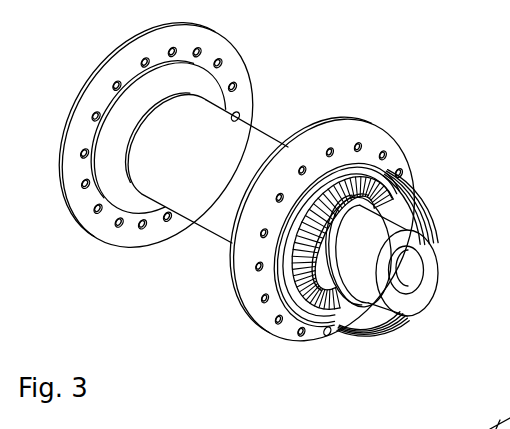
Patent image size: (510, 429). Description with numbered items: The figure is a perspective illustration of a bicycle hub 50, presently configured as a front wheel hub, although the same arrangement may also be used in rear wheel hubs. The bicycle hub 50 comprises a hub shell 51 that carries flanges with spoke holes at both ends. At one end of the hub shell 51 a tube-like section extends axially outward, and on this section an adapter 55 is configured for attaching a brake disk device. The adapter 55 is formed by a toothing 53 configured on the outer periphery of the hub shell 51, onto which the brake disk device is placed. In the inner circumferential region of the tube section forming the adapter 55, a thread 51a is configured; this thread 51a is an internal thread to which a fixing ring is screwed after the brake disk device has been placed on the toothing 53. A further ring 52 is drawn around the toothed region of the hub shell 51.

The bicycle hub 50 is at (95, 60).
The hub shell 51 is at (340, 343).
The thread 51a is at (380, 323).
The ratchet ring 52 is at (388, 173).
The toothing 53 is at (302, 279).
The adapter 55 is at (433, 190).